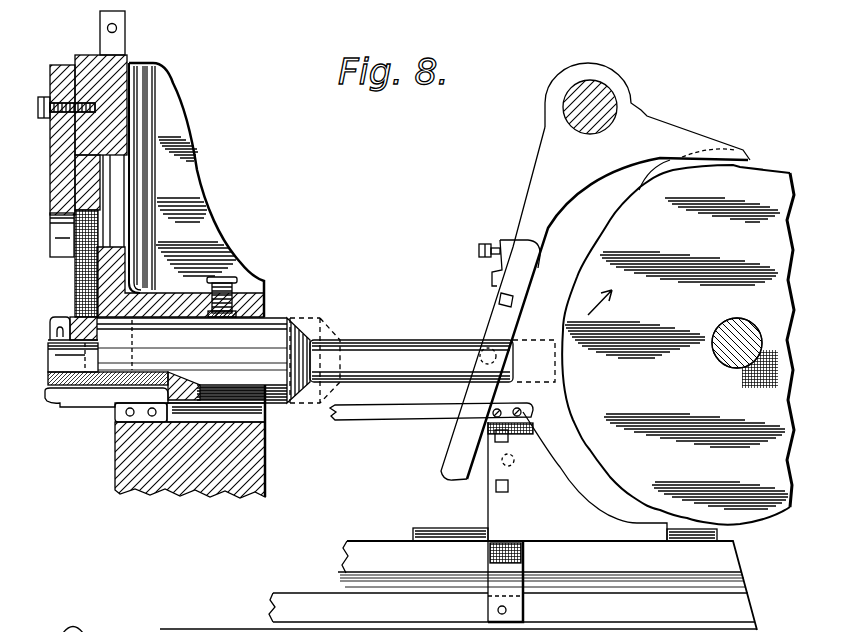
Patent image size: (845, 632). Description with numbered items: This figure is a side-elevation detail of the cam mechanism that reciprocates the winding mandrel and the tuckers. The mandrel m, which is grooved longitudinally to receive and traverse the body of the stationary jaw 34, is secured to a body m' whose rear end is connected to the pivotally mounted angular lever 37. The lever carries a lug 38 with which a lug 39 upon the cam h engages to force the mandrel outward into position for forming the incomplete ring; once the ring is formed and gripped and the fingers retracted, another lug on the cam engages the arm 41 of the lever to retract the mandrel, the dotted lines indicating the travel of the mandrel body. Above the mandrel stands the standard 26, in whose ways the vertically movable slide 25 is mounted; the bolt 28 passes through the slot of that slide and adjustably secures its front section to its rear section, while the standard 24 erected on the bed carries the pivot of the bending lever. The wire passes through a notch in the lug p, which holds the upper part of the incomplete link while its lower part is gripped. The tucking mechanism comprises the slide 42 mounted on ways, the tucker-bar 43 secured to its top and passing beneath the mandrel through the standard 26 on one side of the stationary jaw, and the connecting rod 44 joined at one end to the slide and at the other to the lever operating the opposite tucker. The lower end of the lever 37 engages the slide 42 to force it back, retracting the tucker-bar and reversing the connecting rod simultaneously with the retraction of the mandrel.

The vertically movable slide 25 is at (129, 33).
The bolt 28 is at (50, 108).
The standard 26 is at (196, 190).
The lug p is at (50, 323).
The mandrel m is at (57, 359).
The mandrel body m' is at (326, 360).
The stationary jaw 34 is at (138, 397).
The standard 24 is at (190, 441).
The angular lever 37 is at (594, 303).
The lug 38 is at (603, 180).
The lug 39 is at (654, 173).
The arm 41 is at (647, 111).
The cam h is at (678, 345).
The tucker-bar 43 is at (431, 425).
The slide 42 is at (518, 522).
The connecting rod 44 is at (511, 608).